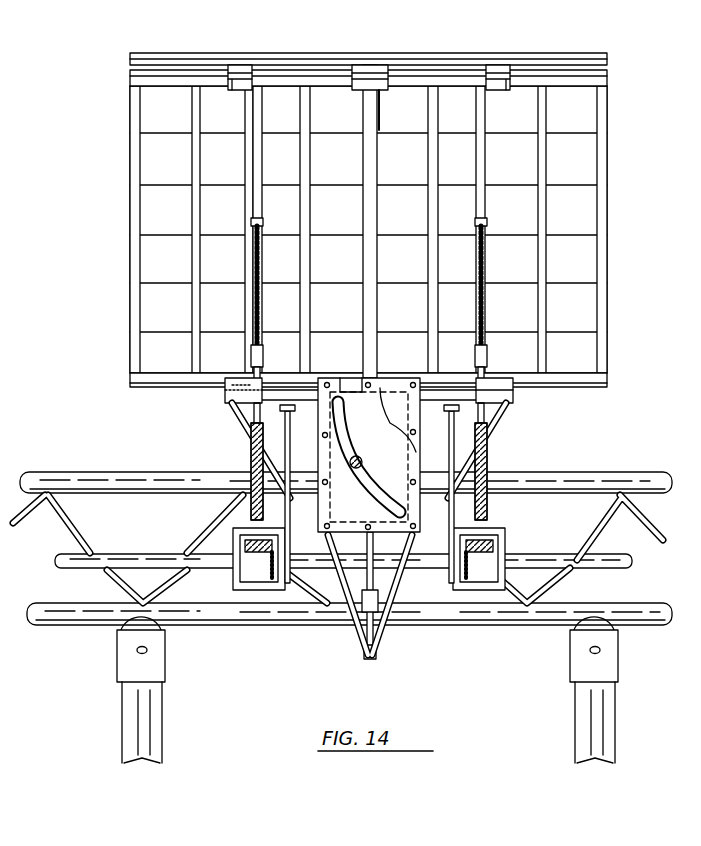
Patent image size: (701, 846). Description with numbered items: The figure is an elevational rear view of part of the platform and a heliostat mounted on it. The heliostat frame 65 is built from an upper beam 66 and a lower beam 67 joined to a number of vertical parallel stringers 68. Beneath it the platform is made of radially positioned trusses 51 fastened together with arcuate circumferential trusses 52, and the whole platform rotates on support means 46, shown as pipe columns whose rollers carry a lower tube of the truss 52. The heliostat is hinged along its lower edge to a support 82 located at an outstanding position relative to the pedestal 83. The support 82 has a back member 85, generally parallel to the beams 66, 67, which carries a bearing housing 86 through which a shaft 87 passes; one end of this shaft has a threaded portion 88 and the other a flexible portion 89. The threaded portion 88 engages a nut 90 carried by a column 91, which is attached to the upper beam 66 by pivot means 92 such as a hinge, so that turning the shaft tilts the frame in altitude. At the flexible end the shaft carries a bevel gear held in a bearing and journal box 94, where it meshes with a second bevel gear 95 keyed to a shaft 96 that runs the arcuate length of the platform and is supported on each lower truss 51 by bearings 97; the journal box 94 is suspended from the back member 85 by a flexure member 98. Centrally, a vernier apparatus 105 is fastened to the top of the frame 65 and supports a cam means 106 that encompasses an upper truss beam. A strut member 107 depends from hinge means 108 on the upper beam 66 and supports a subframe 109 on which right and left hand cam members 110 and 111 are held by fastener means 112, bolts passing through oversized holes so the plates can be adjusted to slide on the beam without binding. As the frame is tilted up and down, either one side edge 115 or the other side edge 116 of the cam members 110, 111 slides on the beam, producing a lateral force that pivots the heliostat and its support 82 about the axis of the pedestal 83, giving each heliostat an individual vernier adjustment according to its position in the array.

The support means 46 is at (160, 702).
The truss 51 is at (354, 462).
The arcuate circumferential truss 52 is at (585, 474).
The frame 65 is at (293, 54).
The upper beam 66 is at (460, 64).
The lower beam 67 is at (600, 385).
The stringer 68 is at (186, 158).
The support 82 is at (506, 408).
The pedestal 83 is at (495, 548).
The back member 85 is at (240, 398).
The bearing housing 86 is at (252, 358).
The shaft 87 is at (484, 413).
The threaded portion 88 is at (255, 262).
The flexible portion 89 is at (252, 460).
The nut 90 is at (260, 222).
The column 91 is at (258, 113).
The pivot means 92 is at (245, 70).
The bearing and journal box 94 is at (487, 526).
The second bevel gear 95 is at (458, 590).
The shaft 96 is at (600, 556).
The bearing 97 is at (322, 603).
The flexure member 98 is at (252, 432).
The vernier apparatus 105 is at (388, 117).
The cam means 106 is at (360, 400).
The strut member 107 is at (364, 113).
The hinge means 108 is at (368, 65).
The subframe 109 is at (385, 392).
The right hand cam member 110 is at (372, 513).
The left hand cam member 111 is at (410, 476).
The fastener means 112 is at (337, 534).
The side edge 115 is at (350, 458).
The side edge 116 is at (348, 428).